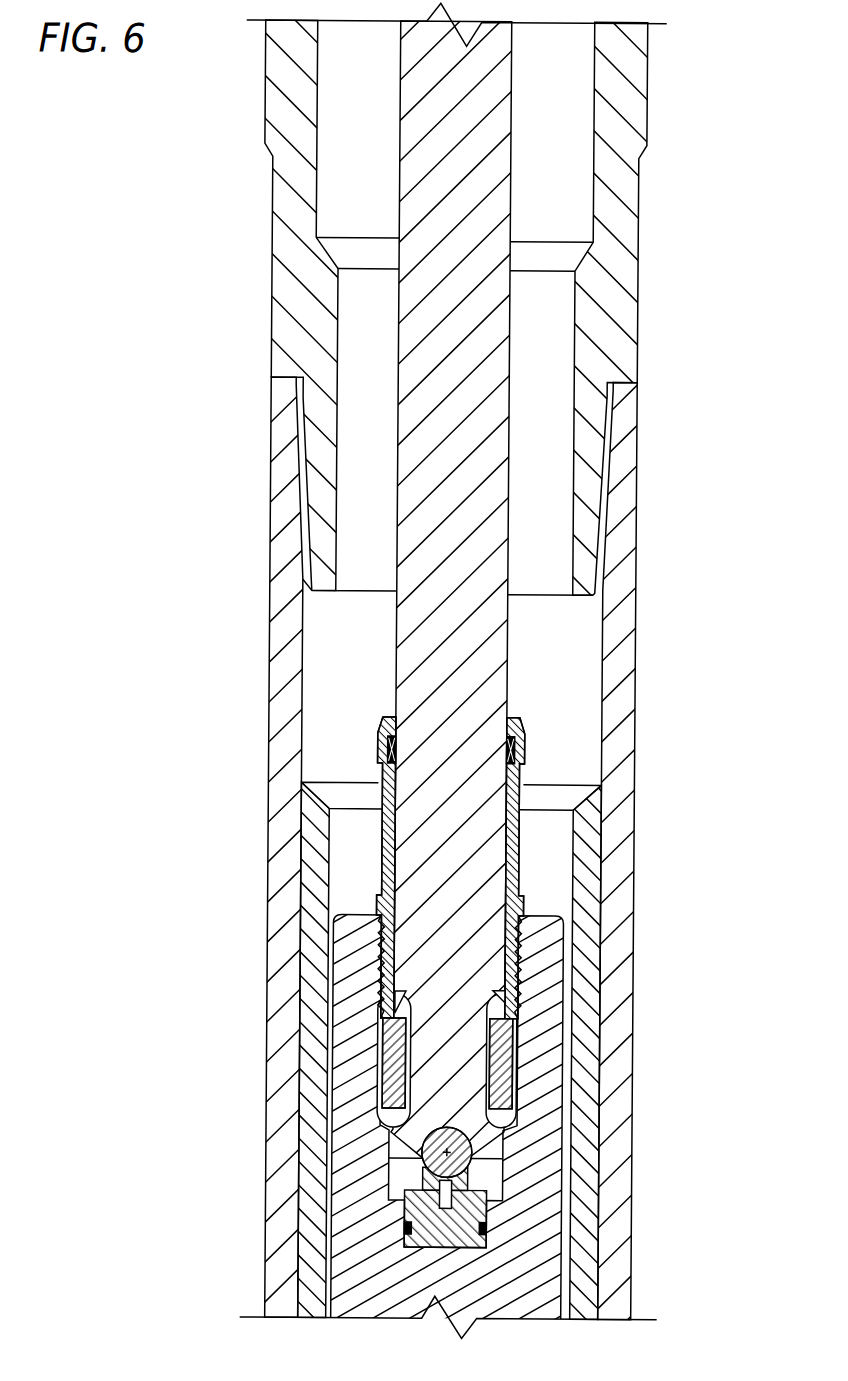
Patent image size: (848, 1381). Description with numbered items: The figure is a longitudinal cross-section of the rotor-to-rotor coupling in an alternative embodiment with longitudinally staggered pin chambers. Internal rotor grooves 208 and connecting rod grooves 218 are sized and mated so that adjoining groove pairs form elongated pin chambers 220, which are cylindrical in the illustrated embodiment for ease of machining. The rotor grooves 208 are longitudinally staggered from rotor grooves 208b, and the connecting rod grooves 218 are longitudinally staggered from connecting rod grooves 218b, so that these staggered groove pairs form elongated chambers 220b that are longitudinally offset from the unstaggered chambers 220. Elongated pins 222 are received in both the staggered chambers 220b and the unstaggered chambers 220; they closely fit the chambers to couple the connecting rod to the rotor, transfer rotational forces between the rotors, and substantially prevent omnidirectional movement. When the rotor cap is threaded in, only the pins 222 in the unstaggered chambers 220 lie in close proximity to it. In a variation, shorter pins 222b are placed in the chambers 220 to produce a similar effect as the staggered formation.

The internal rotor grooves 208 is at (510, 1122).
The rotor grooves 208b is at (380, 1124).
The connecting rod grooves 218 is at (496, 991).
The connecting rod grooves 218b is at (397, 995).
The elongated pin chambers 220 is at (508, 1112).
The elongated chambers 220b is at (398, 1110).
The elongated pins 222 is at (506, 1058).
The pins 222b is at (395, 1062).